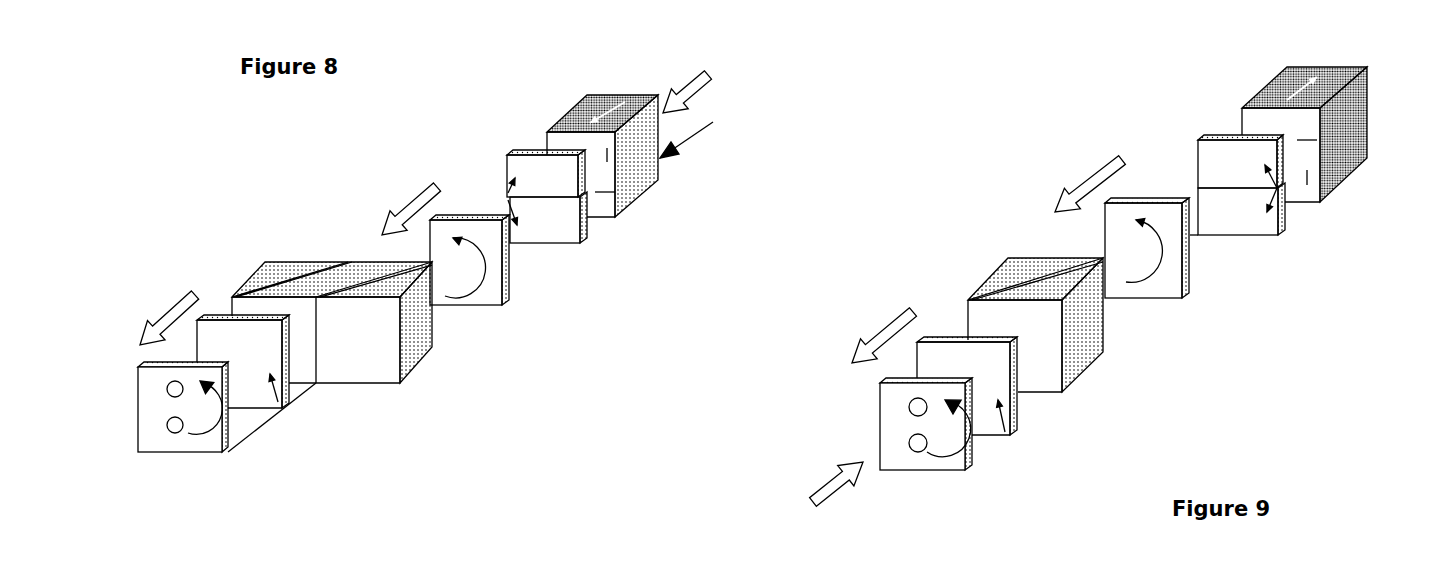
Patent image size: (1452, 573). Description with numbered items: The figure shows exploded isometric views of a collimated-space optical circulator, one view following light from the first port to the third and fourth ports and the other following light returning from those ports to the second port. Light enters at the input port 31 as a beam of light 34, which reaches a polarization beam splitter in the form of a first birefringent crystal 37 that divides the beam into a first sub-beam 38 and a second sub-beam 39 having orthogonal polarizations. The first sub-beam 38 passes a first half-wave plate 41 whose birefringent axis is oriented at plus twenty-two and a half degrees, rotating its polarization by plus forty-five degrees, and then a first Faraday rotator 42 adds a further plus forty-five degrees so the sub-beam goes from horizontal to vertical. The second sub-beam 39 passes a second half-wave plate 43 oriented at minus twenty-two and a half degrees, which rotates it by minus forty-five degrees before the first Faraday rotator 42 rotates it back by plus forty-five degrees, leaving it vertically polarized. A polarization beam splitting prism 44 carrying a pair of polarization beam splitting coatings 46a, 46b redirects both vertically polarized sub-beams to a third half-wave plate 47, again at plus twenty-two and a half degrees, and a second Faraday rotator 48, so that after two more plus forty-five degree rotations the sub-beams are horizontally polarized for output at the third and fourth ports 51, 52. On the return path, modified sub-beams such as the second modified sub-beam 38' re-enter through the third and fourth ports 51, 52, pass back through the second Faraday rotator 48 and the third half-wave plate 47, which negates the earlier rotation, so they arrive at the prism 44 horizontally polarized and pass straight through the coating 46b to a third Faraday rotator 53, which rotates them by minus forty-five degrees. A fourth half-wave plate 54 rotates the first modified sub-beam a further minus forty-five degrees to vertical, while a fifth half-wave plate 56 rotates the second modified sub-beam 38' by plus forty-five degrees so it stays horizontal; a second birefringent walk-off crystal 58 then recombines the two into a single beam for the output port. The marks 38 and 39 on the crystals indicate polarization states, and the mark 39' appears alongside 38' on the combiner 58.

In FIG. 8, the input port 31 is at (661, 161).
In FIG. 8, the beam of light 34 is at (693, 142).
In FIG. 8, the first birefringent crystal 37 is at (587, 100).
In FIG. 8, the first sub-beam 38 is at (626, 218).
In FIG. 8, the second sub-beam 39 is at (549, 124).
In FIG. 8, the first half-wave plate 41 is at (567, 232).
In FIG. 8, the first Faraday rotator 42 is at (495, 307).
In FIG. 8, the second half-wave plate 43 is at (507, 158).
In FIG. 8, the polarization beam splitting prism 44 is at (420, 342).
In FIG. 9, the polarization beam splitting prism 44 is at (1045, 380).
In FIG. 8, the polarization beam splitting coating 46a is at (348, 287).
In FIG. 8, the polarization beam splitting coating 46b is at (330, 266).
In FIG. 9, the polarization beam splitting coating 46b is at (1005, 283).
In FIG. 8, the third half-wave plate 47 is at (220, 325).
In FIG. 9, the third half-wave plate 47 is at (973, 438).
In FIG. 8, the second Faraday rotator 48 is at (202, 453).
In FIG. 9, the second Faraday rotator 48 is at (915, 472).
In FIG. 8, the third port 51 is at (167, 430).
In FIG. 9, the third port 51 is at (908, 440).
In FIG. 8, the fourth port 52 is at (167, 393).
In FIG. 9, the fourth port 52 is at (908, 403).
In FIG. 9, the third Faraday rotator 53 is at (1172, 288).
In FIG. 9, the fourth half-wave plate 54 is at (1247, 233).
In FIG. 9, the fifth half-wave plate 56 is at (1208, 158).
In FIG. 9, the second birefringent walk-off crystal 58 is at (1263, 105).
In FIG. 9, the second modified sub-beam 38' is at (1361, 207).
In FIG. 9, the polarization state mark 39' is at (1373, 146).